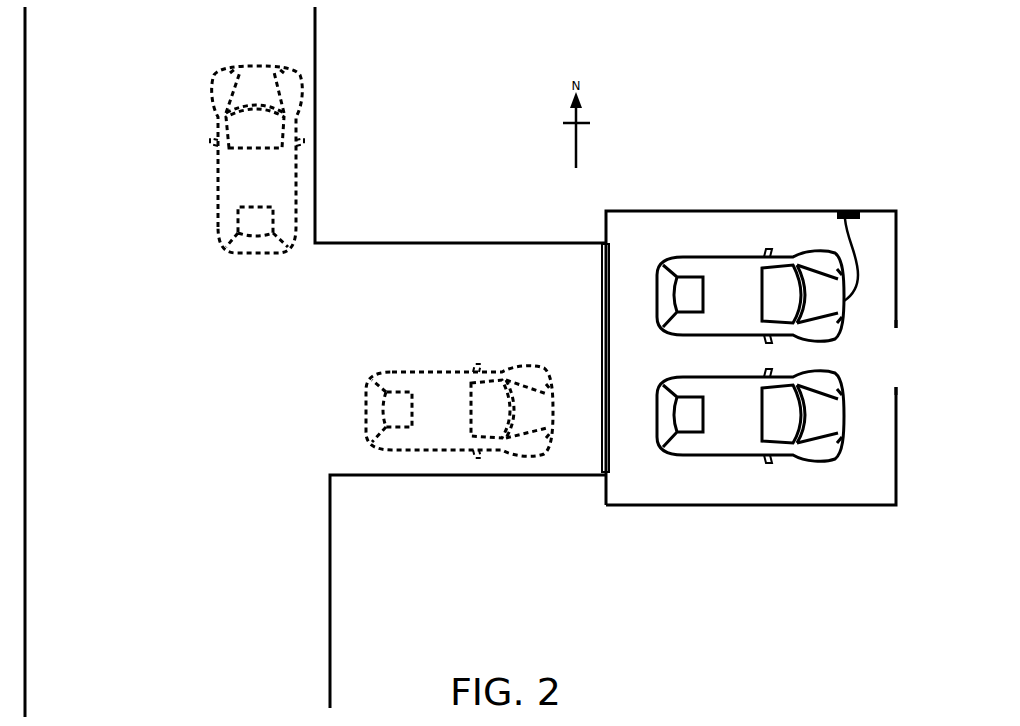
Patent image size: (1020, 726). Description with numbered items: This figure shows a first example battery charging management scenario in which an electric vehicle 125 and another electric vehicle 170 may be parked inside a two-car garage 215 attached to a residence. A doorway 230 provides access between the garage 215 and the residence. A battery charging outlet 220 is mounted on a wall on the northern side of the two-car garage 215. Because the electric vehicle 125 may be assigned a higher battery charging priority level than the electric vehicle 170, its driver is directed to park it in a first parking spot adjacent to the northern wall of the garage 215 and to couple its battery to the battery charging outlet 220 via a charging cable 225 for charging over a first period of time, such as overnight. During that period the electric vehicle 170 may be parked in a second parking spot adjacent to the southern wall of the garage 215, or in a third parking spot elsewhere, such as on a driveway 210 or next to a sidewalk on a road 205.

The electric vehicle 125 is at (729, 257).
The electric vehicle 170 is at (730, 377).
The road 205 is at (186, 411).
The driveway 210 is at (492, 314).
The two-car garage 215 is at (817, 178).
The battery charging outlet 220 is at (839, 221).
The charging cable 225 is at (878, 265).
The doorway 230 is at (912, 356).